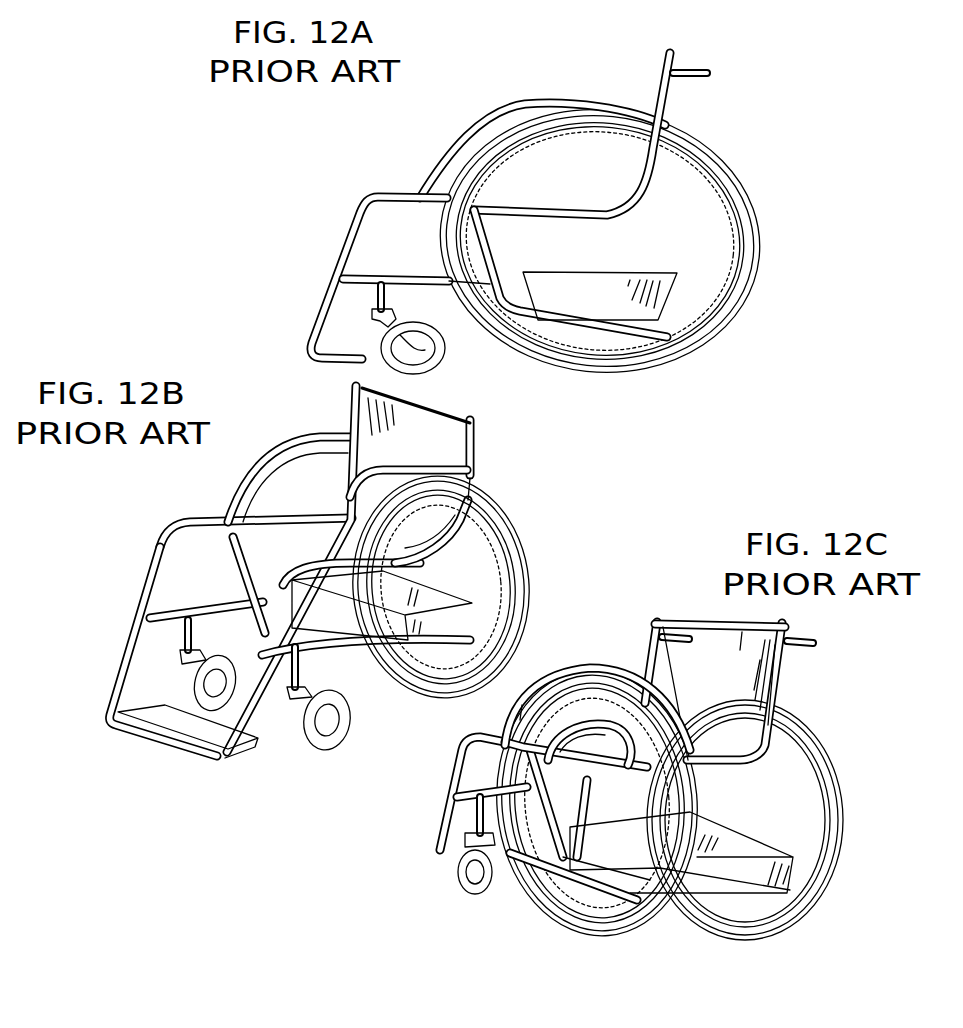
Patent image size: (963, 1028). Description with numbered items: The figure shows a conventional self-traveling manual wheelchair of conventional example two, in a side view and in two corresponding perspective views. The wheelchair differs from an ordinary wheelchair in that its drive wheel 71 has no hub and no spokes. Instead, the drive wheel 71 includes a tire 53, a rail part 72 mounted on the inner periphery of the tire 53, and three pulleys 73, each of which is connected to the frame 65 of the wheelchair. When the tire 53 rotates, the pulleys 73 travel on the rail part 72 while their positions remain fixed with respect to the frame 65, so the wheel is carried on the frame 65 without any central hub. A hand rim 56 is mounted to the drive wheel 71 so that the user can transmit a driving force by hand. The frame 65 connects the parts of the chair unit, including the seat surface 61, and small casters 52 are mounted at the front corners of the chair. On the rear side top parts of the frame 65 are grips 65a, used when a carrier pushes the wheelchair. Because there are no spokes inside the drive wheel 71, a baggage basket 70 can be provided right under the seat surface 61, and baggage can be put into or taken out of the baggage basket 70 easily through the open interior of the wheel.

In FIG. 12A, the caster 52 is at (440, 368).
In FIG. 12B, the caster 52 is at (193, 687).
In FIG. 12C, the caster 52 is at (458, 879).
In FIG. 12A, the tire 53 is at (754, 260).
In FIG. 12B, the tire 53 is at (367, 670).
In FIG. 12C, the tire 53 is at (792, 707).
In FIG. 12A, the hand rim 56 is at (712, 160).
In FIG. 12B, the hand rim 56 is at (527, 513).
In FIG. 12C, the hand rim 56 is at (540, 910).
In FIG. 12A, the seat surface 61 is at (533, 209).
In FIG. 12B, the seat surface 61 is at (223, 517).
In FIG. 12A, the frame 65 is at (360, 217).
In FIG. 12B, the frame 65 is at (438, 557).
In FIG. 12C, the frame 65 is at (547, 752).
In FIG. 12A, the grip 65a is at (701, 68).
In FIG. 12A, the baggage basket 70 is at (677, 297).
In FIG. 12B, the baggage basket 70 is at (470, 598).
In FIG. 12C, the baggage basket 70 is at (721, 826).
In FIG. 12A, the drive wheel 71 is at (751, 211).
In FIG. 12B, the drive wheel 71 is at (480, 481).
In FIG. 12C, the drive wheel 71 is at (757, 927).
In FIG. 12A, the rail part 72 is at (727, 215).
In FIG. 12B, the rail part 72 is at (497, 615).
In FIG. 12C, the rail part 72 is at (510, 893).
In FIG. 12A, the pulley 73 is at (672, 138).
In FIG. 12B, the pulley 73 is at (467, 501).
In FIG. 12C, the pulley 73 is at (610, 682).